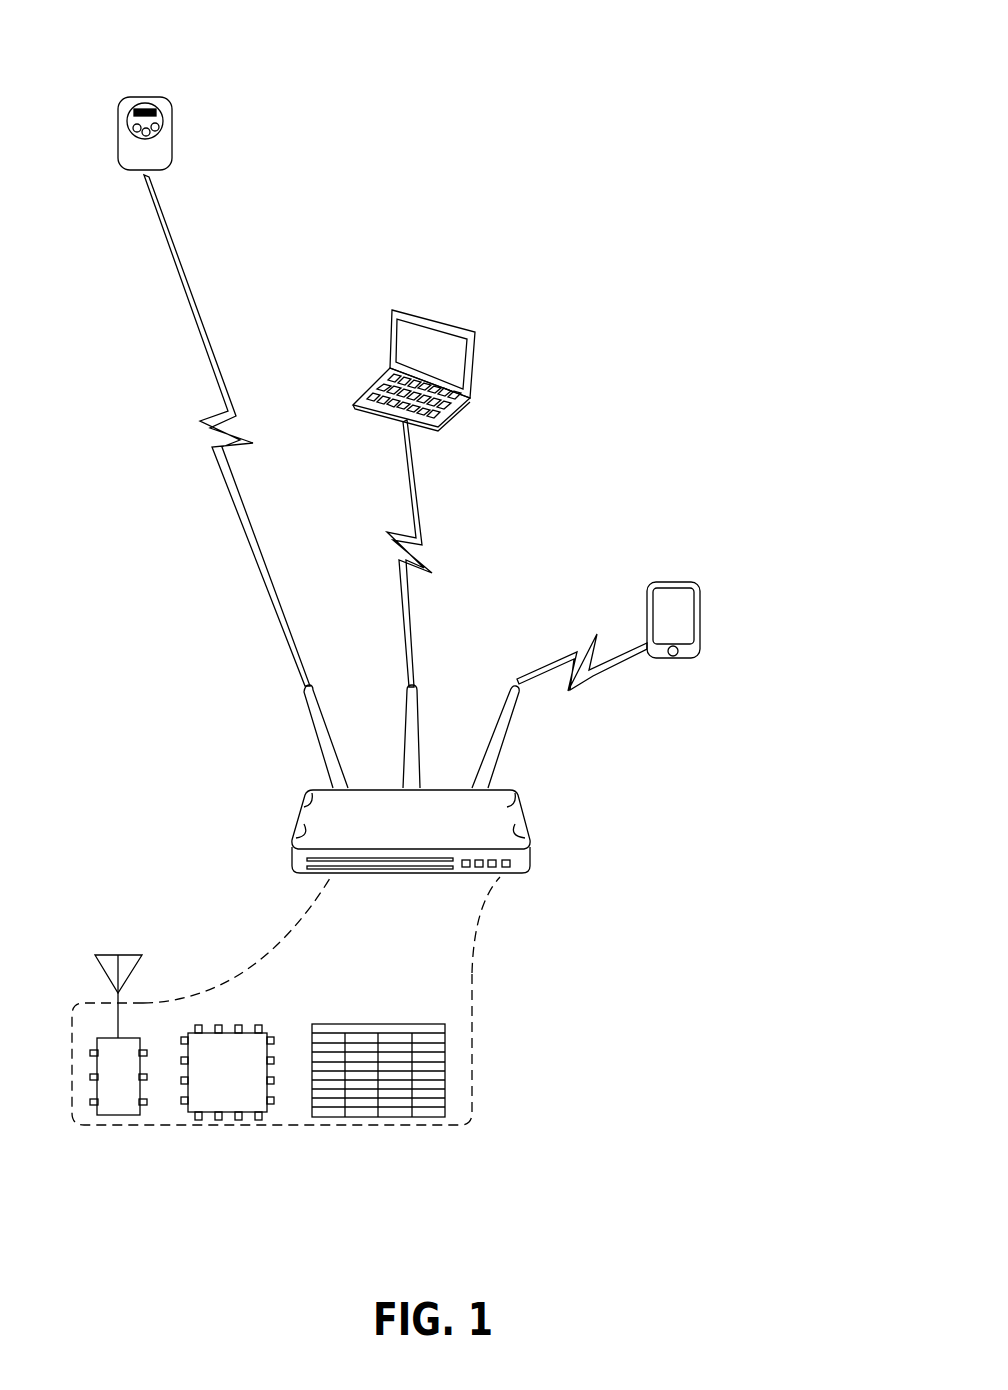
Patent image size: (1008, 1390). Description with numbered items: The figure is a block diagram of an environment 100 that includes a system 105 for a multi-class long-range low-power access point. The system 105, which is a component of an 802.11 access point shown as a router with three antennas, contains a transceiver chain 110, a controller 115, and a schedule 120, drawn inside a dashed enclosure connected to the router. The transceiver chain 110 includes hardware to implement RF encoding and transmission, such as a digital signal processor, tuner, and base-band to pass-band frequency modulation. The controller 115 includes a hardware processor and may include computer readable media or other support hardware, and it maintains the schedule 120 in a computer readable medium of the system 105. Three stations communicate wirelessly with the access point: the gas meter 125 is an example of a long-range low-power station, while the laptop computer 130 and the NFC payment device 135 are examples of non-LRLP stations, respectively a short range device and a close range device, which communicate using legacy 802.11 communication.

The environment 100 is at (735, 24).
The system 105 is at (530, 852).
The transceiver chain 110 is at (119, 1115).
The controller 115 is at (257, 1112).
The schedule 120 is at (445, 1117).
The gas meter 125 is at (118, 130).
The laptop computer 130 is at (432, 315).
The NFC payment device 135 is at (672, 581).